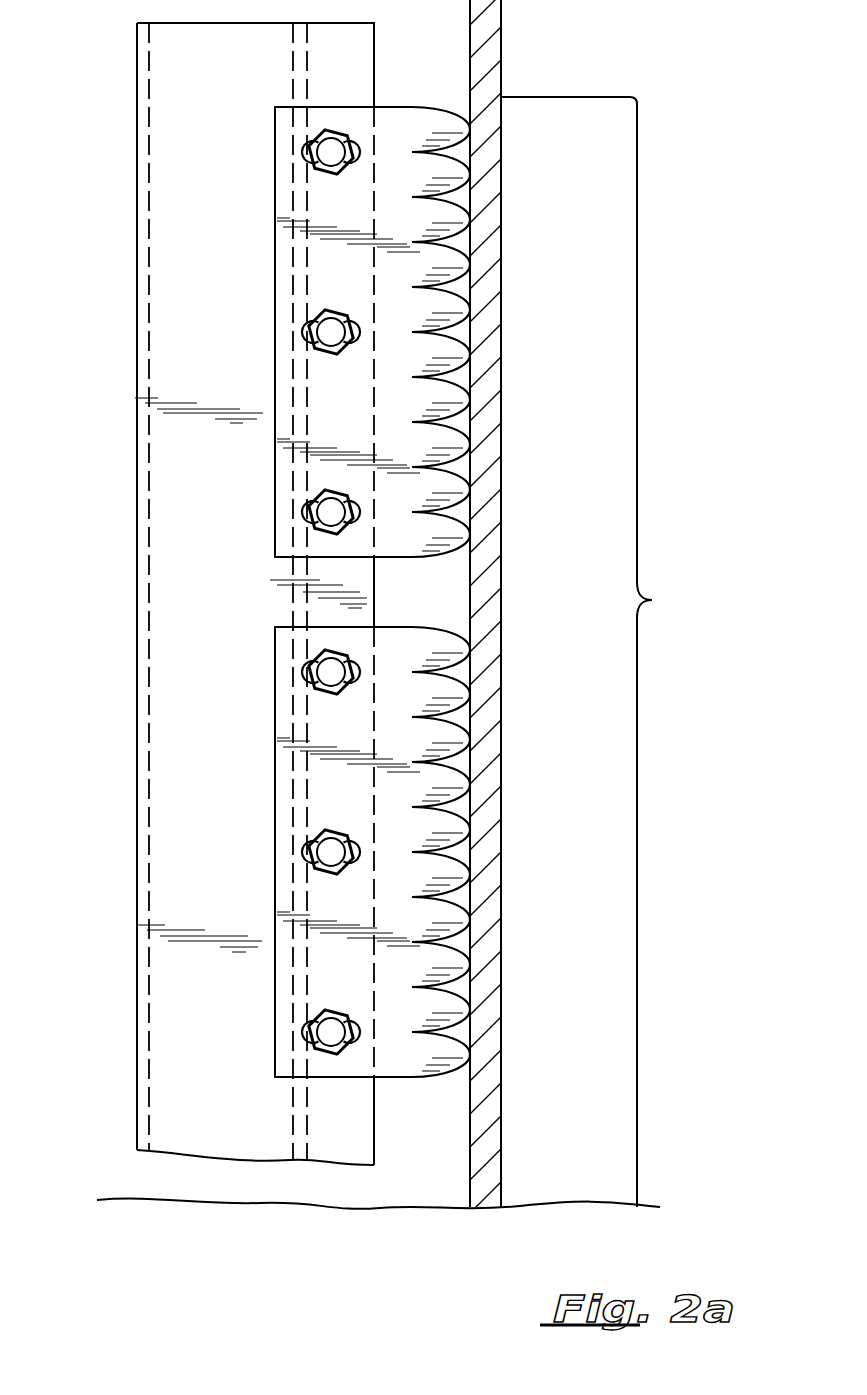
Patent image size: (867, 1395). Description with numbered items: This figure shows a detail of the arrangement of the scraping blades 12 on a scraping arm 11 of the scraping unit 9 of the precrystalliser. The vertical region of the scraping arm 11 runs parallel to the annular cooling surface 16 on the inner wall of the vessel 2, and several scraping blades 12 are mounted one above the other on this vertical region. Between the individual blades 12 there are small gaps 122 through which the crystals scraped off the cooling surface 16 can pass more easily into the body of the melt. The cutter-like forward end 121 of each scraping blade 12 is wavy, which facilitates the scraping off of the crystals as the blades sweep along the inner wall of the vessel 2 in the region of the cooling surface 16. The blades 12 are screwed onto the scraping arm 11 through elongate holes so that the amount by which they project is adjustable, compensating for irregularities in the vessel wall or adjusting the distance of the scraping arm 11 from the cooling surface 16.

The vessel 2 is at (488, 1118).
The scraping unit 9 is at (122, 843).
The scraping arm 11 is at (170, 690).
The scraping blade 12 is at (400, 319).
The cutter-like forward end 121 is at (456, 426).
The gap 122 is at (418, 592).
The cooling surface 16 is at (592, 652).